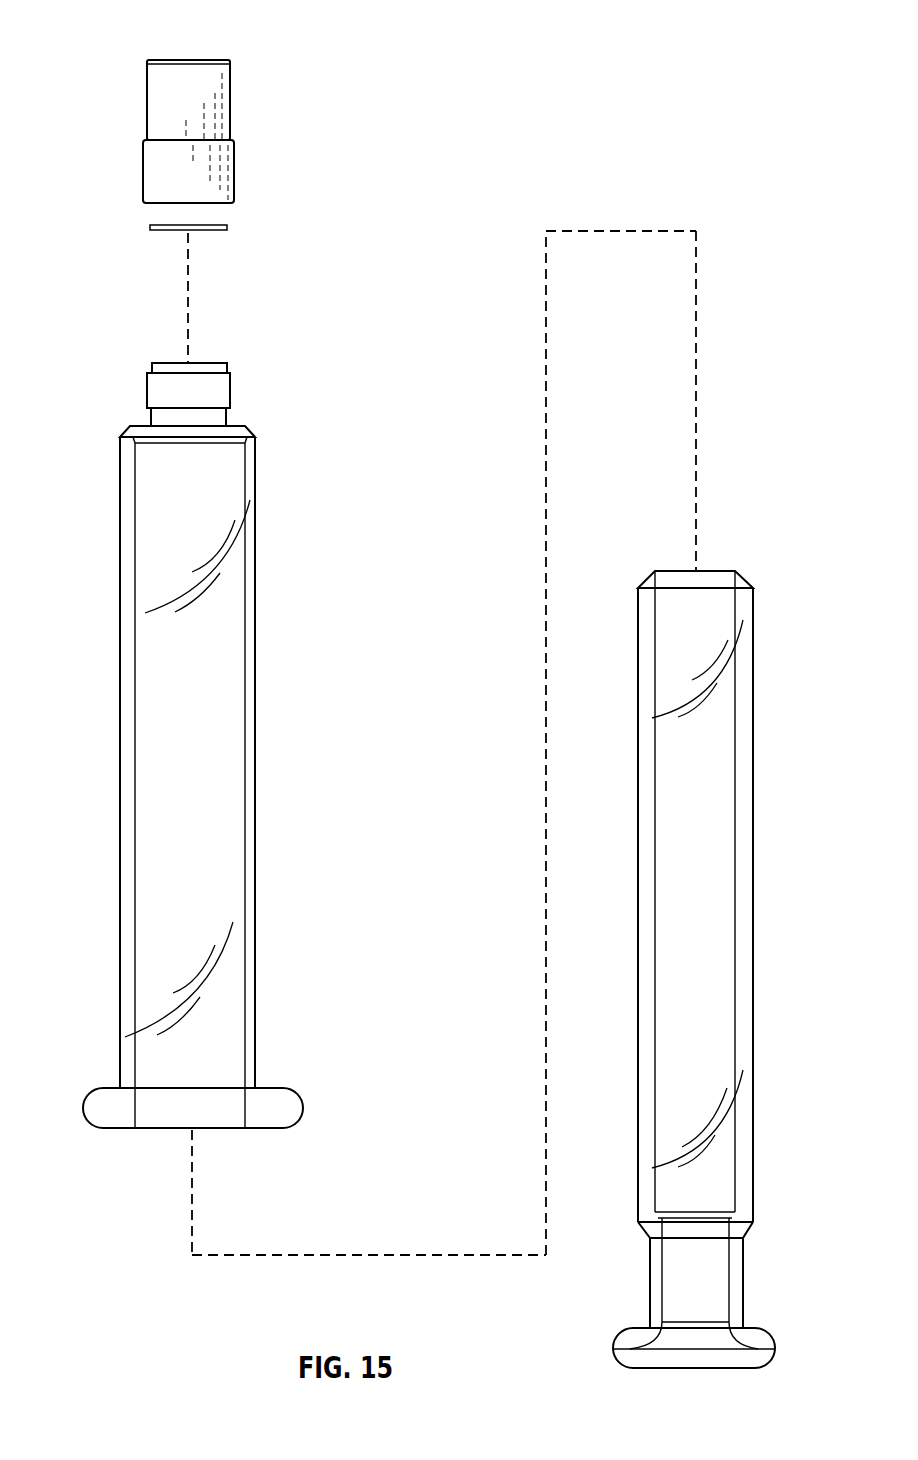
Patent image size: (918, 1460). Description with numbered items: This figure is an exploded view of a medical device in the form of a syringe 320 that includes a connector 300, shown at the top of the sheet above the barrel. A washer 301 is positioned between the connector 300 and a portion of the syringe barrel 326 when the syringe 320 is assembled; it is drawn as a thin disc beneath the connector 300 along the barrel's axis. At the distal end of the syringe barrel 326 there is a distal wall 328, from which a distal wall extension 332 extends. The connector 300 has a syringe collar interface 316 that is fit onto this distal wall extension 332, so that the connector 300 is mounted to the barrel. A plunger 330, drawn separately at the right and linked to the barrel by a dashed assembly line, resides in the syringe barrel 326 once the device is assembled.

The syringe 320 is at (138, 42).
The connector 300 is at (153, 97).
The syringe collar interface 316 is at (225, 181).
The washer 301 is at (150, 228).
The distal wall extension 332 is at (158, 393).
The distal wall 328 is at (240, 432).
The syringe barrel 326 is at (237, 777).
The plunger 330 is at (667, 1048).